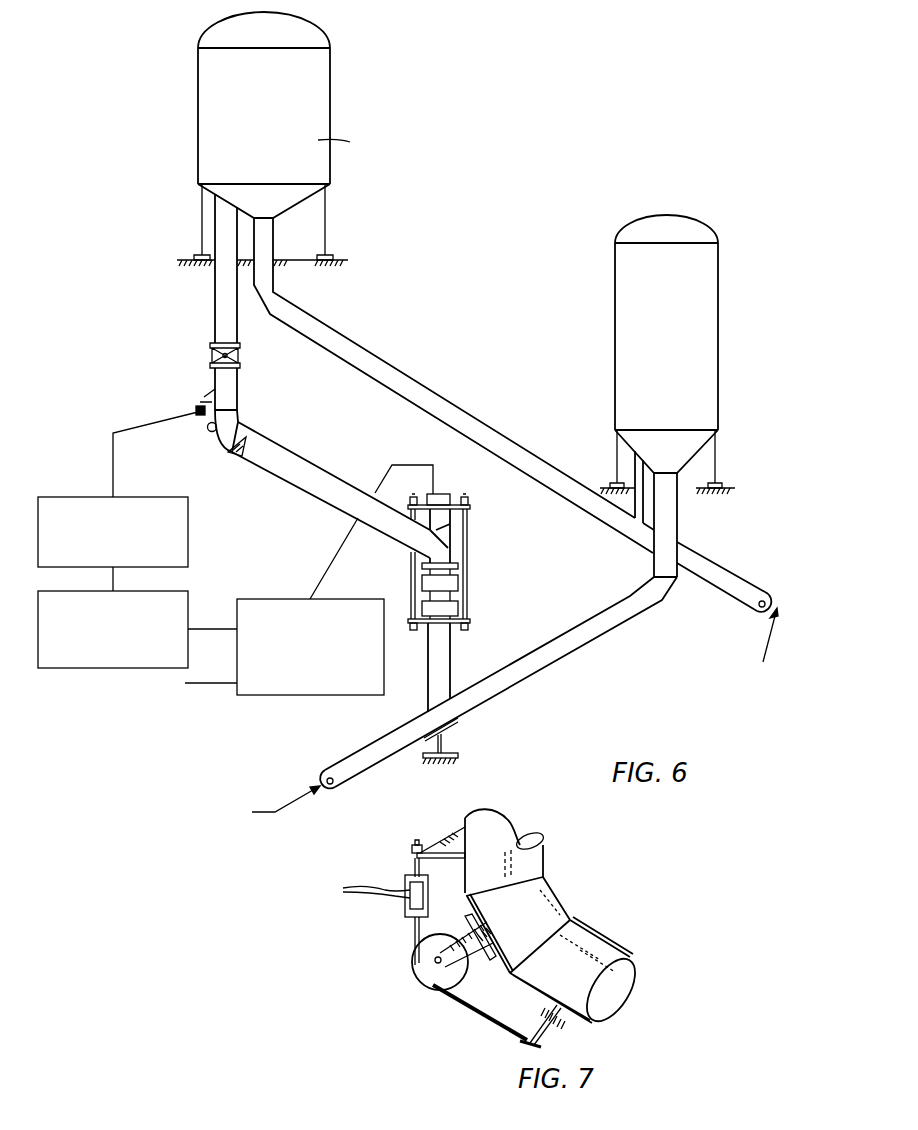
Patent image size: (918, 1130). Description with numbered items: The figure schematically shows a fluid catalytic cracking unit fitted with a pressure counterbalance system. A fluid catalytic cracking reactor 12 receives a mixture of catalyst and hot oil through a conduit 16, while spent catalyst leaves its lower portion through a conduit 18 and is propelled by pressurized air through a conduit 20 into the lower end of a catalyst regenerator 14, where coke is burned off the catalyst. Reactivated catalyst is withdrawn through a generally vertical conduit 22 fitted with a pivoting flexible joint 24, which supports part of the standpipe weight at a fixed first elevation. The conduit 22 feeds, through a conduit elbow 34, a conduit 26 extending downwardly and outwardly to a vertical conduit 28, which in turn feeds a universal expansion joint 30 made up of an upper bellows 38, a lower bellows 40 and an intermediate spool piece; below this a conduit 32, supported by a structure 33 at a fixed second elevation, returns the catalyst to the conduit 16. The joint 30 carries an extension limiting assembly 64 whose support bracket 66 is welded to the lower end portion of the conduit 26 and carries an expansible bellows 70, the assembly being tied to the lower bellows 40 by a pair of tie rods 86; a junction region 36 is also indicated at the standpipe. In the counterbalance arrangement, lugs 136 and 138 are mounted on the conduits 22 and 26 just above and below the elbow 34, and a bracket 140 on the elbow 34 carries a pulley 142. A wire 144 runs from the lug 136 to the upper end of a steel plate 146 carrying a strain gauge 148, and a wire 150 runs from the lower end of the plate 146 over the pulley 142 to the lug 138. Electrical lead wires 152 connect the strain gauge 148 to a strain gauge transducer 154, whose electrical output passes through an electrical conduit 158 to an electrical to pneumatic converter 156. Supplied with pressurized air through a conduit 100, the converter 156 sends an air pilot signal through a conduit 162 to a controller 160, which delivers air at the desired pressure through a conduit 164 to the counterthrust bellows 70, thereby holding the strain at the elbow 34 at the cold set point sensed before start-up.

In FIG. 6, the fluid catalytic cracking reactor 12 is at (630, 346).
In FIG. 6, the catalyst regenerator 14 is at (322, 92).
In FIG. 6, the conduit 16 is at (550, 664).
In FIG. 6, the conduit 18 is at (634, 468).
In FIG. 6, the conduit 20 is at (410, 378).
In FIG. 6, the conduit 22 is at (222, 285).
In FIG. 7, the conduit 22 is at (545, 863).
In FIG. 6, the pivoting flexible joint 24 is at (210, 357).
In FIG. 6, the conduit 26 is at (276, 444).
In FIG. 7, the conduit 26 is at (593, 948).
In FIG. 6, the conduit 28 is at (459, 565).
In FIG. 6, the universal expansion joint 30 is at (458, 592).
In FIG. 6, the conduit 32 is at (450, 660).
In FIG. 6, the support structure 33 is at (452, 739).
In FIG. 6, the conduit elbow 34 is at (247, 425).
In FIG. 7, the conduit elbow 34 is at (550, 903).
In FIG. 6, the pipe junction 36 is at (460, 550).
In FIG. 6, the upper bellows 38 is at (459, 578).
In FIG. 6, the lower bellows 40 is at (459, 605).
In FIG. 6, the extension limiting assembly 64 is at (468, 540).
In FIG. 6, the support bracket 66 is at (444, 530).
In FIG. 6, the expansible bellows 70 is at (440, 494).
In FIG. 6, the tie rods 86 is at (467, 540).
In FIG. 6, the conduit 100 is at (200, 685).
In FIG. 6, the lug 136 is at (212, 396).
In FIG. 7, the lug 136 is at (452, 845).
In FIG. 6, the lug 138 is at (242, 454).
In FIG. 7, the lug 138 is at (562, 1023).
In FIG. 6, the bracket 140 is at (212, 427).
In FIG. 7, the bracket 140 is at (477, 960).
In FIG. 7, the pulley 142 is at (420, 970).
In FIG. 7, the wire 144 is at (413, 849).
In FIG. 7, the steel plate 146 is at (374, 906).
In FIG. 7, the strain gauge 148 is at (407, 908).
In FIG. 7, the wire 150 is at (470, 1017).
In FIG. 6, the electrical lead wires 152 is at (184, 408).
In FIG. 7, the electrical lead wires 152 is at (414, 864).
In FIG. 6, the strain gauge transducer 154 is at (50, 497).
In FIG. 6, the electrical to pneumatic converter 156 is at (66, 668).
In FIG. 6, the electrical conduit 158 is at (115, 578).
In FIG. 6, the controller 160 is at (263, 598).
In FIG. 6, the conduit 162 is at (214, 628).
In FIG. 6, the conduit 164 is at (396, 465).